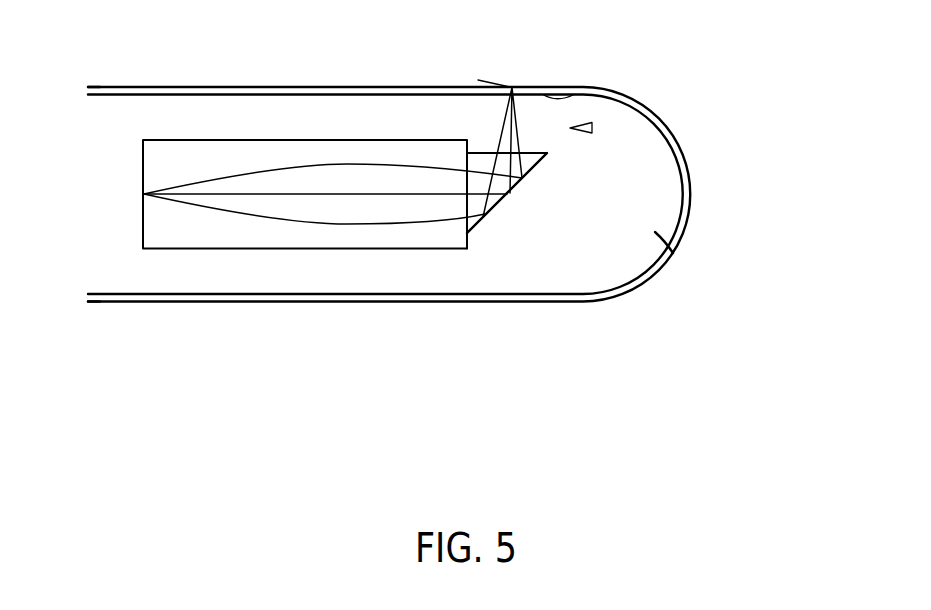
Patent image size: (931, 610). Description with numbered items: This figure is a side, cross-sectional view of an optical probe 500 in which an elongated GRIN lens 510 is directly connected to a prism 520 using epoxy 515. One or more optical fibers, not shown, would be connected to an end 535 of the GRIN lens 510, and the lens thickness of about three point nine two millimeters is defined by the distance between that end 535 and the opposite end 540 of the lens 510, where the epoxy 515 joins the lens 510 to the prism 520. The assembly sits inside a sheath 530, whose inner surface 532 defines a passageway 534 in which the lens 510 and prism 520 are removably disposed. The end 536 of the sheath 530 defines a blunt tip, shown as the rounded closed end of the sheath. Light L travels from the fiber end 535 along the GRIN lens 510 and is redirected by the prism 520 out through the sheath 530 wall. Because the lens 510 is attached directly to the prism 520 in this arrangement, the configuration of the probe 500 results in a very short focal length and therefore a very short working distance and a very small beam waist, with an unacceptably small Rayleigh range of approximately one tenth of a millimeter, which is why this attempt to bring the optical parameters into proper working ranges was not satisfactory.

The optical probe 500 is at (355, 262).
The GRIN lens 510 is at (214, 249).
The epoxy 515 is at (469, 236).
The prism 520 is at (534, 170).
The sheath 530 is at (641, 101).
The inner surface 532 is at (576, 94).
The passageway 534 is at (592, 128).
The end 535 is at (143, 222).
The end 536 is at (673, 253).
The opposite end 540 is at (469, 250).
The light beam L is at (505, 119).